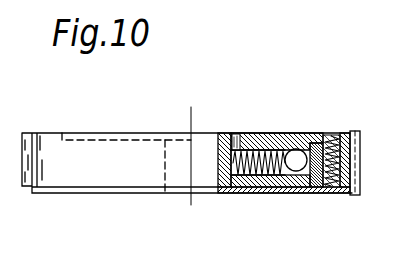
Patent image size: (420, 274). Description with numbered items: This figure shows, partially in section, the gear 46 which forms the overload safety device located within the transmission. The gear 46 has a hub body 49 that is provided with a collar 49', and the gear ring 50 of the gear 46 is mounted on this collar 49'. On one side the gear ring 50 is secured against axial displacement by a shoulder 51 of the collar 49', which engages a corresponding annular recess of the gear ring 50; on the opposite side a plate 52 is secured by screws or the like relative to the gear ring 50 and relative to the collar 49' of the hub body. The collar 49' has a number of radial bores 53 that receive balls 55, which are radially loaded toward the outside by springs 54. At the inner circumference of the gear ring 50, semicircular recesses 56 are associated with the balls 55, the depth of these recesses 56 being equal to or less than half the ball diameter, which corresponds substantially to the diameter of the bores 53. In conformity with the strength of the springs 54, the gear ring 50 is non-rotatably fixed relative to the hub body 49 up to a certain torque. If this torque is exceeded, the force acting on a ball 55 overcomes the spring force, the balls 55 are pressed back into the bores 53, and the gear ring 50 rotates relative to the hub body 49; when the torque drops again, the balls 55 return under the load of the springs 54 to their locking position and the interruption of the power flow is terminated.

The gear 46 is at (172, 208).
The hub body 49 is at (238, 127).
The collar 49' is at (260, 118).
The gear ring 50 is at (343, 133).
The shoulder 51 is at (313, 133).
The plate 52 is at (315, 186).
The radial bores 53 is at (243, 180).
The springs 54 is at (265, 180).
The balls 55 is at (296, 172).
The semicircular recesses 56 is at (327, 156).